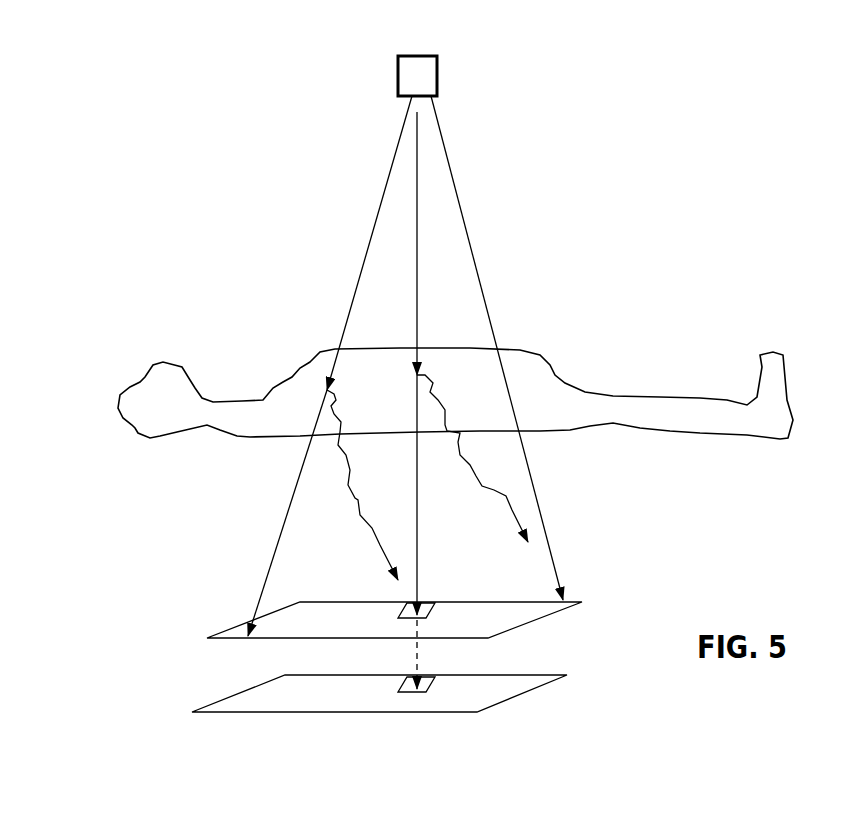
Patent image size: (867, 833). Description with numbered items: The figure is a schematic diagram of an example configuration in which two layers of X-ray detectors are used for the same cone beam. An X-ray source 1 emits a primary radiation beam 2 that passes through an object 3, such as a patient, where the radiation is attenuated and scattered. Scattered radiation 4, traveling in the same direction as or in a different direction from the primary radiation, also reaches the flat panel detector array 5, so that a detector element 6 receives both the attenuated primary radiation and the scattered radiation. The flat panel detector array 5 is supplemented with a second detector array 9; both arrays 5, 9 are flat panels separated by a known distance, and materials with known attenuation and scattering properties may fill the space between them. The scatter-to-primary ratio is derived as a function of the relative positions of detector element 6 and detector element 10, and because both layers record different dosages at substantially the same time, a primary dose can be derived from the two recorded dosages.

The X-ray source 1 is at (420, 55).
The primary radiation beam 2 is at (435, 282).
The object 3 is at (548, 357).
The scattered radiation 4 is at (358, 498).
The flat panel detector array 5 is at (318, 639).
The detector element 6 is at (430, 618).
The second detector array 9 is at (293, 713).
The detector element 10 is at (430, 692).